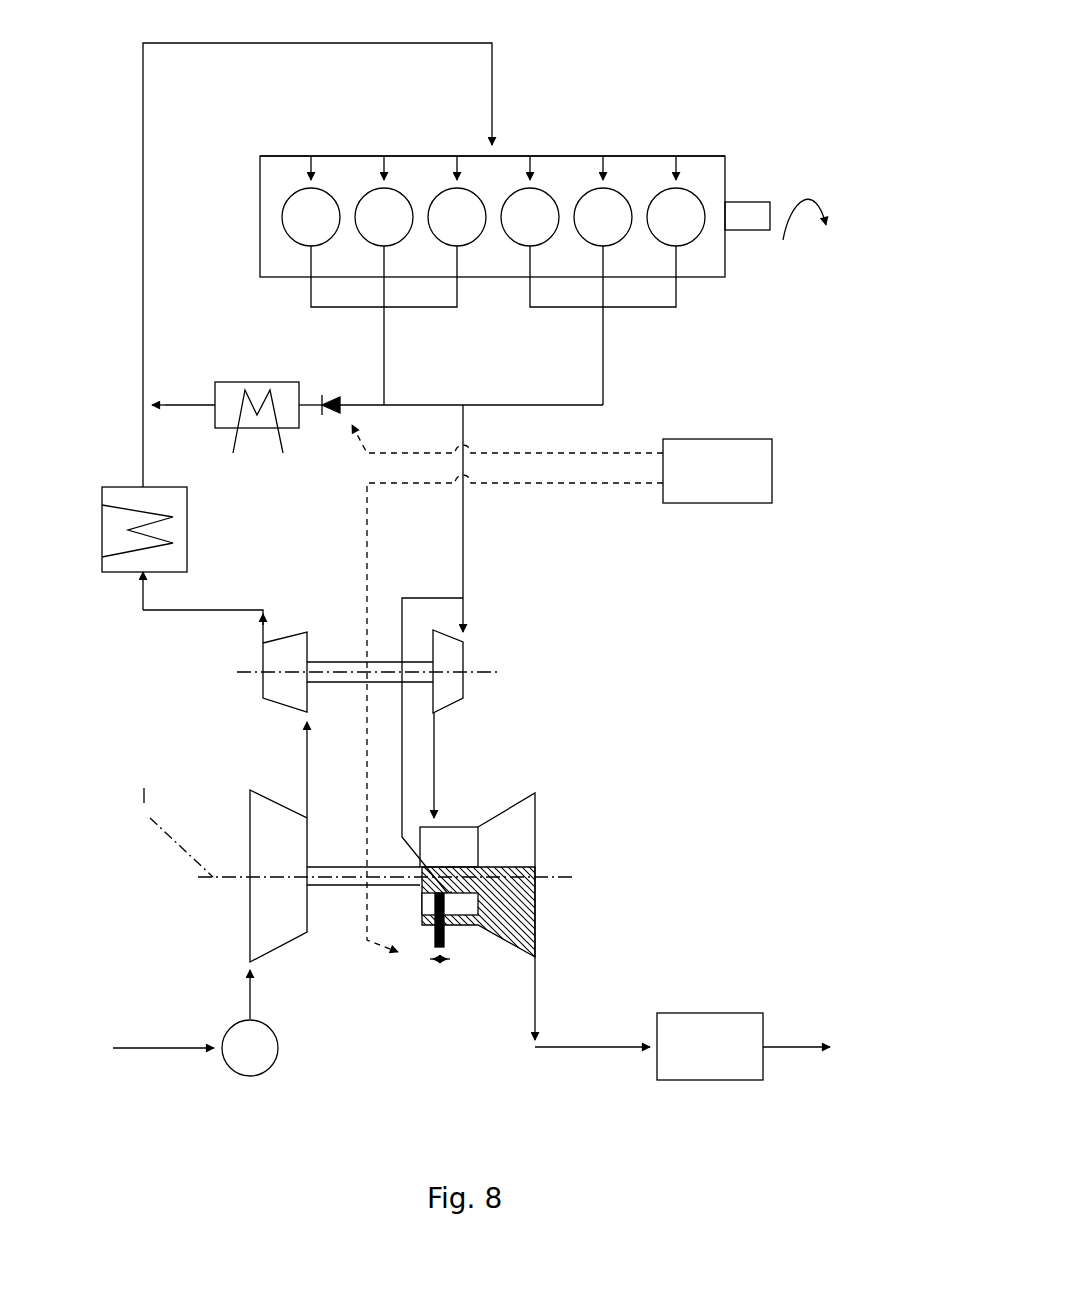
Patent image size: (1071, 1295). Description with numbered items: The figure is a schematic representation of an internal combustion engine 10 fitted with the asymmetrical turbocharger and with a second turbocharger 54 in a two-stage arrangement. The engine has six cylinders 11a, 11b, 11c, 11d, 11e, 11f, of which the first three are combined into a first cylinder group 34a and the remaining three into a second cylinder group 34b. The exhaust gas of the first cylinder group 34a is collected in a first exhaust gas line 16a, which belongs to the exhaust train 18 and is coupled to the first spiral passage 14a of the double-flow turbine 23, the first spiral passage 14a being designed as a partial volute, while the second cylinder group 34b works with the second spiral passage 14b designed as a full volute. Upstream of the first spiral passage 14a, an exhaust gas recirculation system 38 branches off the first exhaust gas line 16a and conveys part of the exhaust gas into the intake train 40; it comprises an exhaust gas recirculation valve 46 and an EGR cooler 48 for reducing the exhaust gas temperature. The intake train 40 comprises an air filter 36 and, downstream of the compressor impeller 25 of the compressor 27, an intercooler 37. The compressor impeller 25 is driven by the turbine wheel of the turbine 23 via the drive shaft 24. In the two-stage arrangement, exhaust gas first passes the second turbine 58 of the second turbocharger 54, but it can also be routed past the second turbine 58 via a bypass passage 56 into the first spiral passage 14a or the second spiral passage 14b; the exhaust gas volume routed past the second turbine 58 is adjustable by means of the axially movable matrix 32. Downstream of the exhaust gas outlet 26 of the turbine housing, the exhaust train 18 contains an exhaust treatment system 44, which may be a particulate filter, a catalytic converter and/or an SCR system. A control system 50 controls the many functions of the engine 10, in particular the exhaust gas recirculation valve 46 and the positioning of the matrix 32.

The internal combustion engine 10 is at (713, 124).
The cylinder 11a is at (369, 231).
The cylinder 11b is at (384, 280).
The cylinder 11c is at (457, 201).
The cylinder 11d is at (588, 231).
The cylinder 11e is at (603, 280).
The cylinder 11f is at (676, 201).
The first cylinder group 34a is at (359, 150).
The second cylinder group 34b is at (628, 150).
The exhaust gas recirculation system 38 is at (266, 460).
The exhaust gas recirculation valve 46 is at (332, 394).
The EGR cooler 48 is at (252, 381).
The intercooler 37 is at (177, 553).
The control system 50 is at (562, 688).
The second turbocharger 54 is at (479, 657).
The second turbine 58 is at (456, 702).
The first exhaust gas line 16a is at (466, 546).
The bypass passage 56 is at (428, 592).
The first spiral passage 14a is at (458, 848).
The second spiral passage 14b is at (472, 925).
The double-flow turbine 23 is at (562, 813).
The matrix 32 is at (425, 953).
The drive shaft 24 is at (336, 869).
The compressor impeller 25 is at (258, 913).
The compressor 27 is at (276, 966).
The air filter 36 is at (250, 1048).
The intake train 40 is at (204, 1088).
The exhaust gas outlet 26 is at (535, 1062).
The exhaust train 18 is at (570, 1088).
The exhaust treatment system 44 is at (710, 1046).